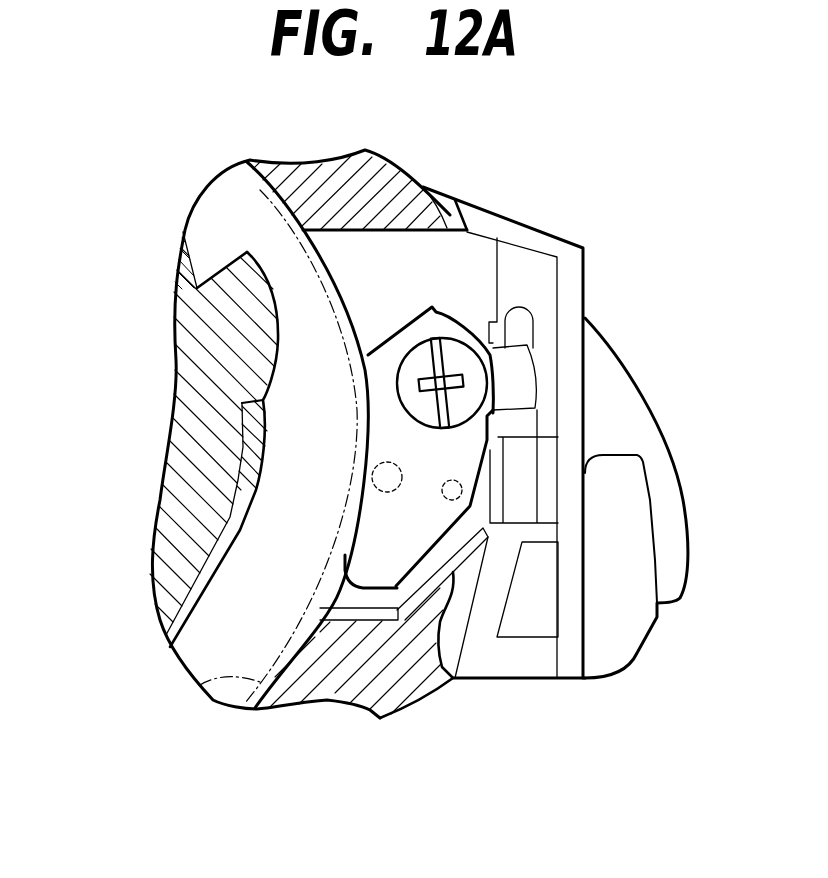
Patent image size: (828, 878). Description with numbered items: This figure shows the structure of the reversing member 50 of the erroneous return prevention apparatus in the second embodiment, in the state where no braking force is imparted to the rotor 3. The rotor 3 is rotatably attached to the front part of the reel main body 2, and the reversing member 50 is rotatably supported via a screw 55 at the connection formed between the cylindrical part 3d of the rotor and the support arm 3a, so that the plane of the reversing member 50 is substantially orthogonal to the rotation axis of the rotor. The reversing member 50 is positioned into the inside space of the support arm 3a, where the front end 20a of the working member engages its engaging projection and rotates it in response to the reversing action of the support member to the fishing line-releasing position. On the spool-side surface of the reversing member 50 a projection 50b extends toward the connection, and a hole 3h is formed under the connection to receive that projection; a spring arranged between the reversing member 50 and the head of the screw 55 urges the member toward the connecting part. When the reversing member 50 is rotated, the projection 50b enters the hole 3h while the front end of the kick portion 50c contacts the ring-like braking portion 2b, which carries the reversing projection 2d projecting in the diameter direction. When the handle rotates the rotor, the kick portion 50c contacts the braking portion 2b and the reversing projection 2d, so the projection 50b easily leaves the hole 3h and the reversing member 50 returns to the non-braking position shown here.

The reel main body 2 is at (170, 527).
The braking portion 2b is at (185, 237).
The reversing projection 2d is at (273, 258).
The rotor 3 is at (393, 177).
The support arm 3a is at (533, 242).
The cylindrical part 3d is at (200, 685).
The hole 3h is at (372, 475).
The front end of the working member 20a is at (523, 323).
The reversing member 50 is at (462, 450).
The projection 50b is at (462, 490).
The kick portion 50c is at (385, 568).
The screw 55 is at (470, 365).